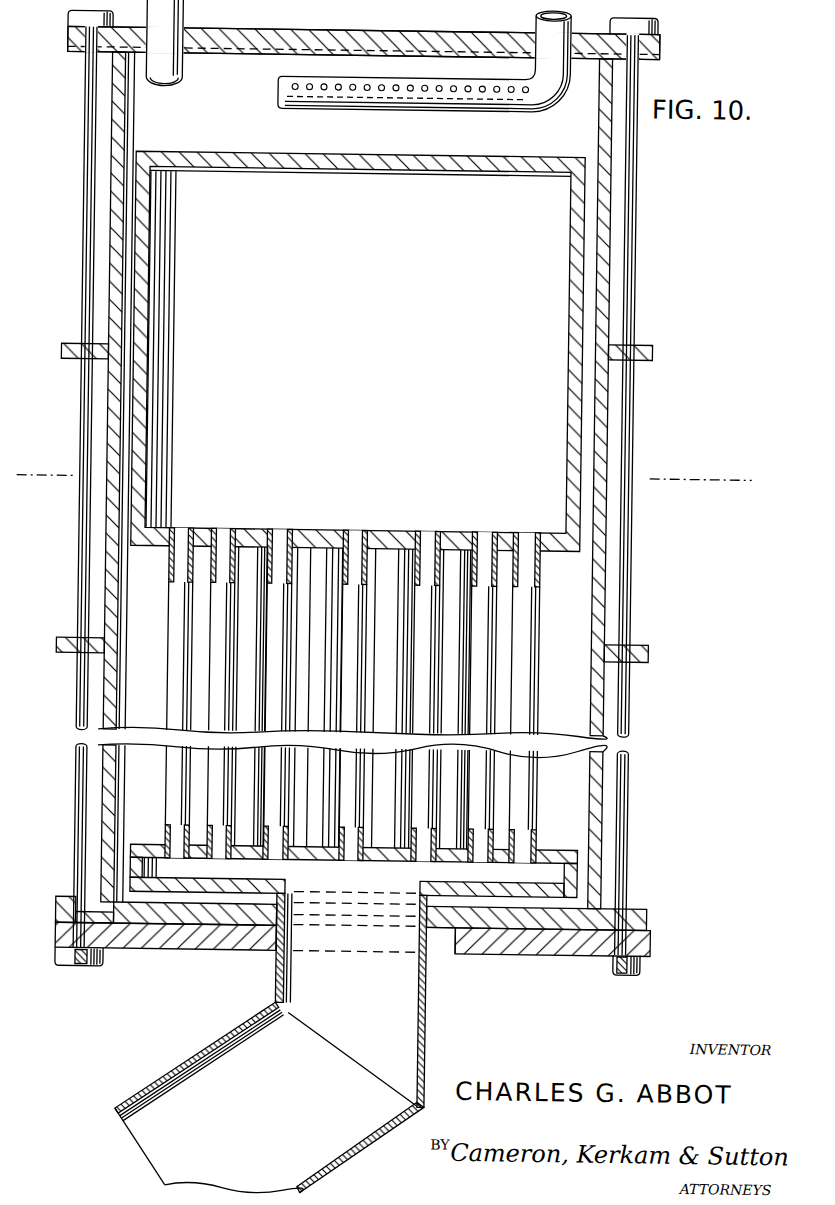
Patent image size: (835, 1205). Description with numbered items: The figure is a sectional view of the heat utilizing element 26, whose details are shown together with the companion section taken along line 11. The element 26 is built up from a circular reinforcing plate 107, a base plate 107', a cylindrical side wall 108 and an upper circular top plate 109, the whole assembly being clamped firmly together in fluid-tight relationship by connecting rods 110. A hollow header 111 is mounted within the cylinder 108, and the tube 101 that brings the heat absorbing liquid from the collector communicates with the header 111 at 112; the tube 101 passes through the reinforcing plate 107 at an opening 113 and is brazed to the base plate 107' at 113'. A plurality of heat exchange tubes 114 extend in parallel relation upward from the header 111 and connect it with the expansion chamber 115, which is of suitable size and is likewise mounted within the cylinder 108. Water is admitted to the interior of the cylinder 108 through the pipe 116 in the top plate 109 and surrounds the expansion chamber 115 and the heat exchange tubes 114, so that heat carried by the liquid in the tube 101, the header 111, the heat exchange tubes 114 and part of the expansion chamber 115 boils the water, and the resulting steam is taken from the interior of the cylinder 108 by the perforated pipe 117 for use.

The heat utilizing element 26 is at (359, 285).
The tube 101 is at (358, 1162).
The circular reinforcing plate 107 is at (352, 961).
The base plate 107' is at (375, 894).
The cylindrical side wall 108 is at (593, 807).
The upper circular top plate 109 is at (282, 42).
The connecting rods 110 is at (79, 531).
The hollow header 111 is at (158, 852).
The communication point 112 is at (419, 880).
The opening 113 is at (456, 963).
The brazed joint 113' is at (232, 944).
The heat exchange tubes 114 is at (536, 628).
The expansion chamber 115 is at (568, 316).
The pipe 116 is at (153, 76).
The perforated pipe 117 is at (527, 18).
The section line 11 is at (20, 468).